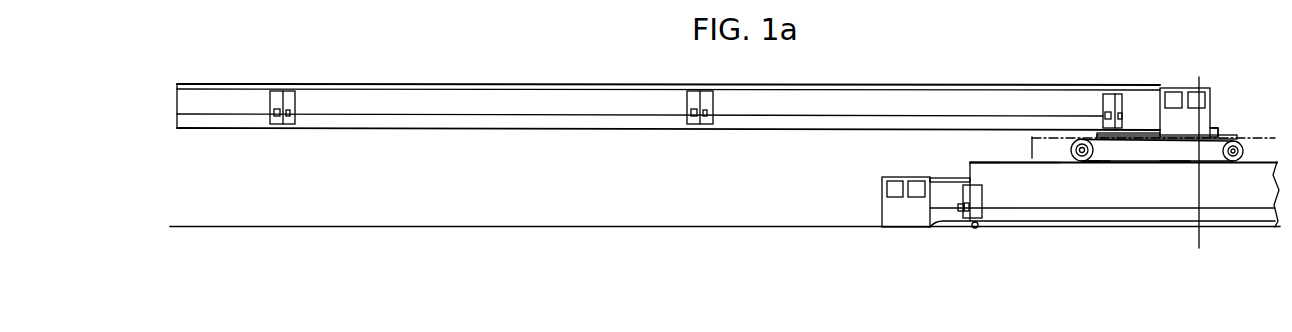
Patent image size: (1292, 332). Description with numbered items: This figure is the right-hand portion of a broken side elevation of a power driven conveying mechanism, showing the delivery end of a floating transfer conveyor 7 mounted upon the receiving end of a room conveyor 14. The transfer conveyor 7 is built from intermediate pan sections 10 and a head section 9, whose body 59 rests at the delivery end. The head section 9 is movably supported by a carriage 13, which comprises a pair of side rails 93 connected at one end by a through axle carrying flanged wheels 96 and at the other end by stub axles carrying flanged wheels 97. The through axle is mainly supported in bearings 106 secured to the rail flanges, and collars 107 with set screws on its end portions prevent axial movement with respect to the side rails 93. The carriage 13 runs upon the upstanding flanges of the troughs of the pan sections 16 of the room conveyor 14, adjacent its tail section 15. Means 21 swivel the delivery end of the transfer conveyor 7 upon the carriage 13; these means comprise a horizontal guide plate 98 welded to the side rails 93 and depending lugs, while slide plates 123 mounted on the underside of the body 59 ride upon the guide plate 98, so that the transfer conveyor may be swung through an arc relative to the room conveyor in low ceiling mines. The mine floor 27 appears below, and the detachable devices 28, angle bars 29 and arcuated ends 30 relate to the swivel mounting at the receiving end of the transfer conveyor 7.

The transfer conveyor 7 is at (551, 83).
The intermediate pan sections 10 is at (250, 107).
The mine floor 27 is at (480, 226).
The head section 9 is at (1209, 96).
The body 59 is at (1132, 98).
The horizontal guide plate 98 is at (1131, 136).
The slide plates 123 is at (1218, 137).
The means for swiveling the delivery end 21 is at (1218, 138).
The carriage 13 is at (1132, 148).
The flanged wheels 96 is at (1073, 153).
The flanged wheels 97 is at (1252, 160).
The collars 107 is at (1069, 160).
The bearings 106 is at (1097, 158).
The side rails 93 is at (1178, 159).
The receiving or room conveyor 14 is at (1250, 214).
The arcuated ends 30 is at (1070, 202).
The detachable devices 28 is at (966, 163).
The angle bars 29 is at (989, 163).
The tail section 15 is at (921, 220).
The pan sections 16 is at (1190, 81).